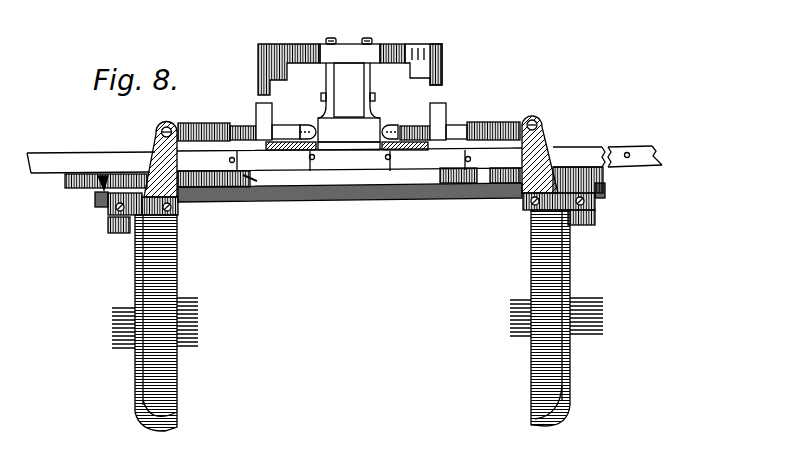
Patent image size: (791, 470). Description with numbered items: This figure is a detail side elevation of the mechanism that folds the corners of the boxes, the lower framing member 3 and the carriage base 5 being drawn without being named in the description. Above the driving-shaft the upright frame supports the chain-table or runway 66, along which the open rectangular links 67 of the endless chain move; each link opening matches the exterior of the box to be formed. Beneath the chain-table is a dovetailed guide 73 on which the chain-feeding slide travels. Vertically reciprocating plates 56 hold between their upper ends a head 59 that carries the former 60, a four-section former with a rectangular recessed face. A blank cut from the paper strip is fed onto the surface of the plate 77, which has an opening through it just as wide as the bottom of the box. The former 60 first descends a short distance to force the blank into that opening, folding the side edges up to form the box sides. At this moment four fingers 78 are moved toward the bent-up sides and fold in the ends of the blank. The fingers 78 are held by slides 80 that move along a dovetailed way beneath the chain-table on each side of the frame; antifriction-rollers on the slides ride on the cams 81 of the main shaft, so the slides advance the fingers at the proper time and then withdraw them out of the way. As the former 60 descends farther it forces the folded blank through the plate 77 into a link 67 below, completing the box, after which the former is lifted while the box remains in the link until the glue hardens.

The frame bar 3 is at (200, 338).
The carriage base block 5 is at (342, 143).
The plates 56 is at (258, 67).
The head 59 is at (410, 52).
The former 60 is at (349, 90).
The chain-table or runway 66 is at (344, 152).
The open rectangular links 67 is at (266, 160).
The dovetailed guide 73 is at (232, 203).
The plate 77 is at (297, 143).
The fingers 78 is at (358, 153).
The slides 80 is at (117, 215).
The cams 81 is at (351, 320).